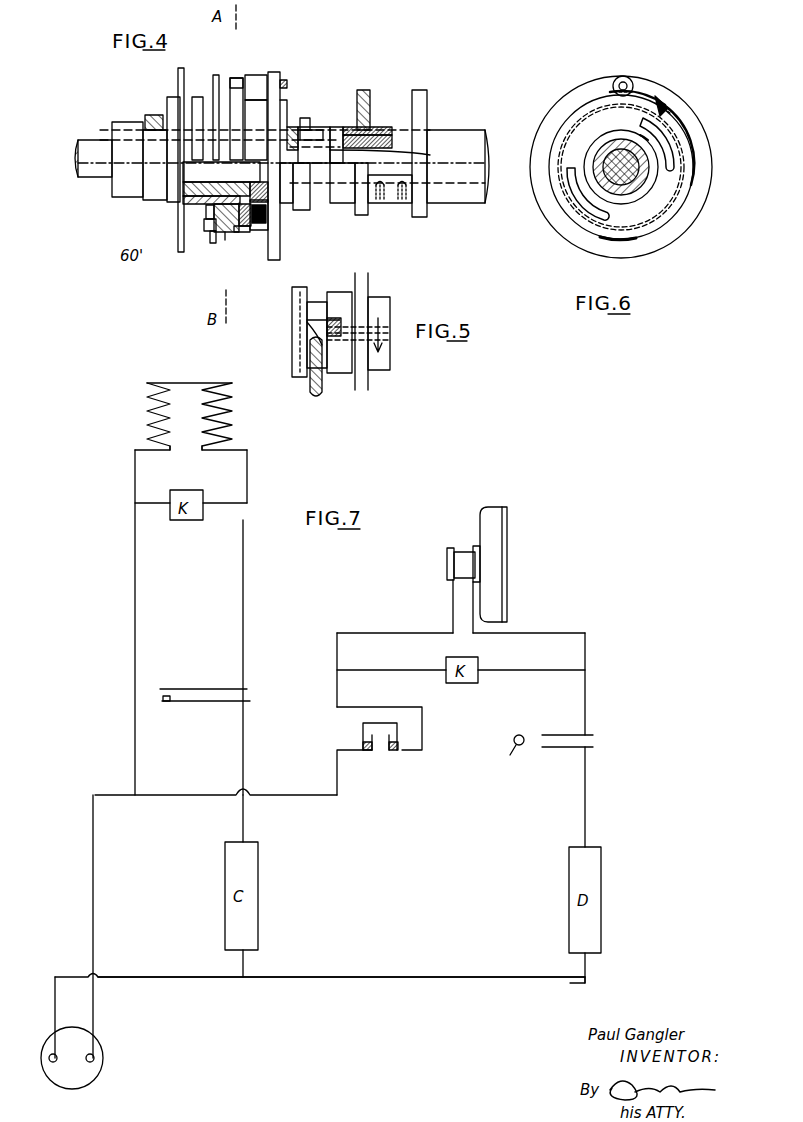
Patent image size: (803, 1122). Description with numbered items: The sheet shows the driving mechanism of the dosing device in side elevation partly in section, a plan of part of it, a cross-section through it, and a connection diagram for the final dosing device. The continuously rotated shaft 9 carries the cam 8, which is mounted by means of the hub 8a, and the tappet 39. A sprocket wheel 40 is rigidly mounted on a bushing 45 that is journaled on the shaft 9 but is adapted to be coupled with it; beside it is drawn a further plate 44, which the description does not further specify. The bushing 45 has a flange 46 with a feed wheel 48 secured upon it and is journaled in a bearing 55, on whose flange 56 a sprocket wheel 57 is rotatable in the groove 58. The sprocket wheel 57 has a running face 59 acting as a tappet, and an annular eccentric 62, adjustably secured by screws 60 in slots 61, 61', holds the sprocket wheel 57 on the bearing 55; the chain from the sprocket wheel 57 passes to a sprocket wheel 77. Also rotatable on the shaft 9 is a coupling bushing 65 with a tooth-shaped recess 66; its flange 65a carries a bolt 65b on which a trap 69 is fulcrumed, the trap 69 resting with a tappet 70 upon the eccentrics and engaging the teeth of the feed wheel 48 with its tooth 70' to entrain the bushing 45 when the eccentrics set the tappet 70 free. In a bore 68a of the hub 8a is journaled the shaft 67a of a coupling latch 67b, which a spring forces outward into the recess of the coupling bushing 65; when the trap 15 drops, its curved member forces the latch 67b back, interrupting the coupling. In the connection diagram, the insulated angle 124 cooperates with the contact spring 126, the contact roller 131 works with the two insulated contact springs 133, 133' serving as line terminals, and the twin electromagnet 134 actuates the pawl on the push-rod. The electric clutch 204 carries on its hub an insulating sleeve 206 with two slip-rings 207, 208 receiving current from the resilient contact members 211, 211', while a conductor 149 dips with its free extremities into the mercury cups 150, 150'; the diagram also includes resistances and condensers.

In FIG. 4, the cam 8 is at (363, 90).
In FIG. 5, the cam 8 is at (368, 290).
In FIG. 4, the hub 8a is at (380, 132).
In FIG. 4, the shaft 9 is at (486, 165).
In FIG. 6, the shaft 9 is at (612, 158).
In FIG. 5, the trap 15 is at (320, 396).
In FIG. 4, the tappet 39 is at (427, 112).
In FIG. 4, the sprocket wheel 40 is at (178, 72).
In FIG. 4, the plate 44 is at (197, 97).
In FIG. 4, the bushing 45 is at (230, 183).
In FIG. 6, the bushing 45 is at (645, 172).
In FIG. 4, the flange 46 is at (250, 226).
In FIG. 4, the feed wheel 48 is at (268, 222).
In FIG. 6, the feed wheel 48 is at (680, 126).
In FIG. 4, the bearing 55 is at (190, 204).
In FIG. 6, the bearing 55 is at (650, 180).
In FIG. 4, the flange 56 is at (214, 225).
In FIG. 4, the sprocket wheel 57 is at (212, 245).
In FIG. 4, the groove 58 is at (224, 245).
In FIG. 4, the running face 59 is at (233, 232).
In FIG. 6, the running face 59 is at (560, 214).
In FIG. 4, the screw 60 is at (202, 212).
In FIG. 6, the slot 61 is at (639, 137).
In FIG. 6, the slot 61' is at (599, 196).
In FIG. 4, the annular eccentric 62 is at (240, 240).
In FIG. 6, the annular eccentric 62 is at (630, 243).
In FIG. 4, the coupling bushing 65 is at (296, 127).
In FIG. 5, the coupling bushing 65 is at (300, 287).
In FIG. 4, the flange 65a is at (283, 110).
In FIG. 6, the flange 65a is at (590, 82).
In FIG. 4, the bolt 65b is at (287, 82).
In FIG. 6, the bolt 65b is at (623, 86).
In FIG. 4, the tooth-shaped recess 66 is at (307, 125).
In FIG. 5, the tooth-shaped recess 66 is at (320, 302).
In FIG. 4, the shaft 67a is at (372, 127).
In FIG. 4, the coupling latch 67b is at (316, 140).
In FIG. 5, the coupling latch 67b is at (325, 322).
In FIG. 4, the bore 68a is at (391, 155).
In FIG. 4, the trap 69 is at (256, 75).
In FIG. 6, the trap 69 is at (645, 92).
In FIG. 4, the tappet 70 is at (233, 99).
In FIG. 6, the tappet 70 is at (687, 84).
In FIG. 6, the tooth 70' is at (691, 95).
In FIG. 5, the sprocket wheel 77 is at (330, 340).
In FIG. 7, the angle 124 is at (180, 702).
In FIG. 7, the contact spring 126 is at (172, 688).
In FIG. 7, the contact roller 131 is at (508, 754).
In FIG. 7, the contact spring 133 is at (564, 721).
In FIG. 7, the contact spring 133' is at (566, 760).
In FIG. 7, the twin electromagnet 134 is at (225, 418).
In FIG. 7, the conductor 149 is at (398, 700).
In FIG. 7, the mercury cup 150 is at (342, 738).
In FIG. 7, the mercury cup 150' is at (430, 738).
In FIG. 7, the electric clutch 204 is at (502, 549).
In FIG. 7, the sleeve 206 is at (464, 552).
In FIG. 7, the slip-ring 207 is at (451, 548).
In FIG. 7, the slip-ring 208 is at (476, 546).
In FIG. 7, the resilient contact member 211 is at (426, 606).
In FIG. 7, the resilient contact member 211' is at (513, 607).